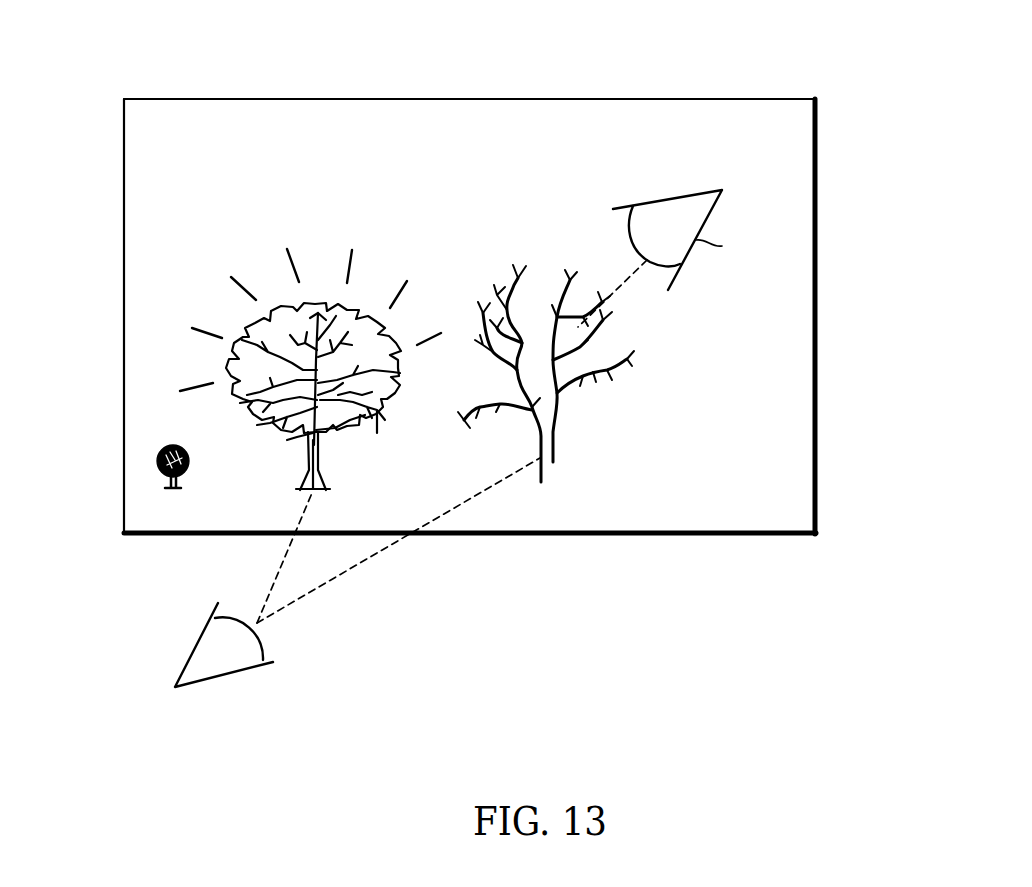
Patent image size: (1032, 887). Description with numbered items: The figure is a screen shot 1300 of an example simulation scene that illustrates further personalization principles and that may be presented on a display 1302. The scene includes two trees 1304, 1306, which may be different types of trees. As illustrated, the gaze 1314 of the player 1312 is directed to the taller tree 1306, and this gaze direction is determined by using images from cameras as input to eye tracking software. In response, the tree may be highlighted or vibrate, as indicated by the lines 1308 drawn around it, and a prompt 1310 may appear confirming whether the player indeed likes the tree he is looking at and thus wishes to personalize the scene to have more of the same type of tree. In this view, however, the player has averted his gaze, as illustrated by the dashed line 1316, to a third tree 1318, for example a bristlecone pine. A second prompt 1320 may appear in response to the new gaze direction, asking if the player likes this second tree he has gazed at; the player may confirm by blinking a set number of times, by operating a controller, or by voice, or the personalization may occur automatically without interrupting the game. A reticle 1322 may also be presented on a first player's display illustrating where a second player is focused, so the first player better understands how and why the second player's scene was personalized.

The screen shot 1300 is at (480, 130).
The display 1302 is at (585, 98).
The tree 1304 is at (168, 481).
The taller tree 1306 is at (300, 462).
The lines 1308 is at (229, 278).
The prompt 1310 is at (210, 192).
The player 1312 is at (226, 675).
The gaze 1314 is at (276, 580).
The dashed line 1316 is at (352, 568).
The third tree 1318 is at (627, 359).
The second prompt 1320 is at (763, 447).
The reticle 1322 is at (664, 200).